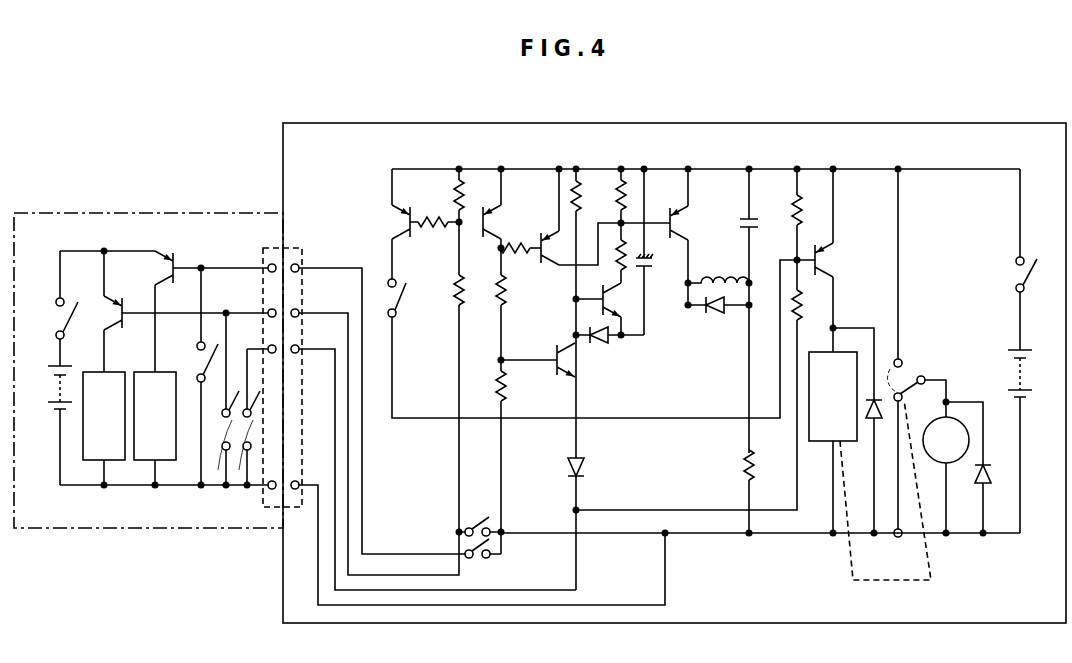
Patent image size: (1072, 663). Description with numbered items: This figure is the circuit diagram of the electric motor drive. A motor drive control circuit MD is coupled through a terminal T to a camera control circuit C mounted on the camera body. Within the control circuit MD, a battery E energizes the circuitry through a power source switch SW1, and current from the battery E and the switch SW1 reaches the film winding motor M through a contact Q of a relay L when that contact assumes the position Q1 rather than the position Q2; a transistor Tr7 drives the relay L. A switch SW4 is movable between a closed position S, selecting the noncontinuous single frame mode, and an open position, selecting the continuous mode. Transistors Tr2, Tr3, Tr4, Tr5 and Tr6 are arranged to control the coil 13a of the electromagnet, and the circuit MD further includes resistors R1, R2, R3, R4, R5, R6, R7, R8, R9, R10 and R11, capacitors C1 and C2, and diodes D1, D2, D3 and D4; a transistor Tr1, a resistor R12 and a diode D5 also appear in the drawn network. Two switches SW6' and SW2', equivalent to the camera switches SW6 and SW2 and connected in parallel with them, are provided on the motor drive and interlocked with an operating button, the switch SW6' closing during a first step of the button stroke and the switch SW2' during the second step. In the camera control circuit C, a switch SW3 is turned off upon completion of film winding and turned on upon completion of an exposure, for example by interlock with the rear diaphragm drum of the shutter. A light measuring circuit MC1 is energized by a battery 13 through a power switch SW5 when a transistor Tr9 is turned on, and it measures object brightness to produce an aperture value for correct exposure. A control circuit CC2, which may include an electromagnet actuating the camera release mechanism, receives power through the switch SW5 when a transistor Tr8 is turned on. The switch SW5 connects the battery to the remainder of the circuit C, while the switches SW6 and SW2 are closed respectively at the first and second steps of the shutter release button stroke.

The motor drive control circuit MD is at (674, 357).
The camera control circuit C is at (114, 213).
The terminal T is at (297, 257).
The battery 13 is at (50, 425).
The coil 13a is at (718, 266).
The transistor Tr1 is at (389, 222).
The transistor Tr2 is at (482, 234).
The transistor Tr3 is at (549, 263).
The transistor Tr4 is at (581, 361).
The transistor Tr5 is at (626, 300).
The transistor Tr6 is at (693, 224).
The transistor Tr7 is at (838, 260).
The transistor Tr8 is at (100, 307).
The transistor Tr9 is at (151, 269).
The resistor R1 is at (434, 209).
The resistor R2 is at (470, 195).
The resistor R3 is at (470, 291).
The resistor R4 is at (520, 237).
The resistor R5 is at (512, 291).
The resistor R6 is at (512, 388).
The resistor R7 is at (587, 198).
The resistor R8 is at (627, 190).
The resistor R9 is at (616, 258).
The resistor R10 is at (764, 467).
The resistor R11 is at (811, 211).
The resistor R12 is at (811, 306).
The power source switch SW1 is at (1007, 259).
The switch SW2 is at (212, 456).
The switch SW3 is at (241, 456).
The switch SW4 is at (406, 296).
The power switch SW5 is at (48, 308).
The switch SW6 is at (192, 362).
The switch SW2' is at (480, 516).
The switch SW6' is at (483, 563).
The capacitor C1 is at (657, 252).
The capacitor C2 is at (760, 220).
The diode D1 is at (610, 344).
The diode D2 is at (587, 470).
The diode D3 is at (718, 319).
The diode D4 is at (872, 422).
The diode D5 is at (995, 478).
The control circuit CC2 is at (104, 416).
The light measuring circuit MC1 is at (155, 416).
The relay L is at (833, 396).
The film winding motor M is at (946, 440).
The battery E is at (1023, 441).
The contact position Q1 is at (908, 349).
The contact position Q2 is at (904, 399).
The contact Q is at (907, 378).